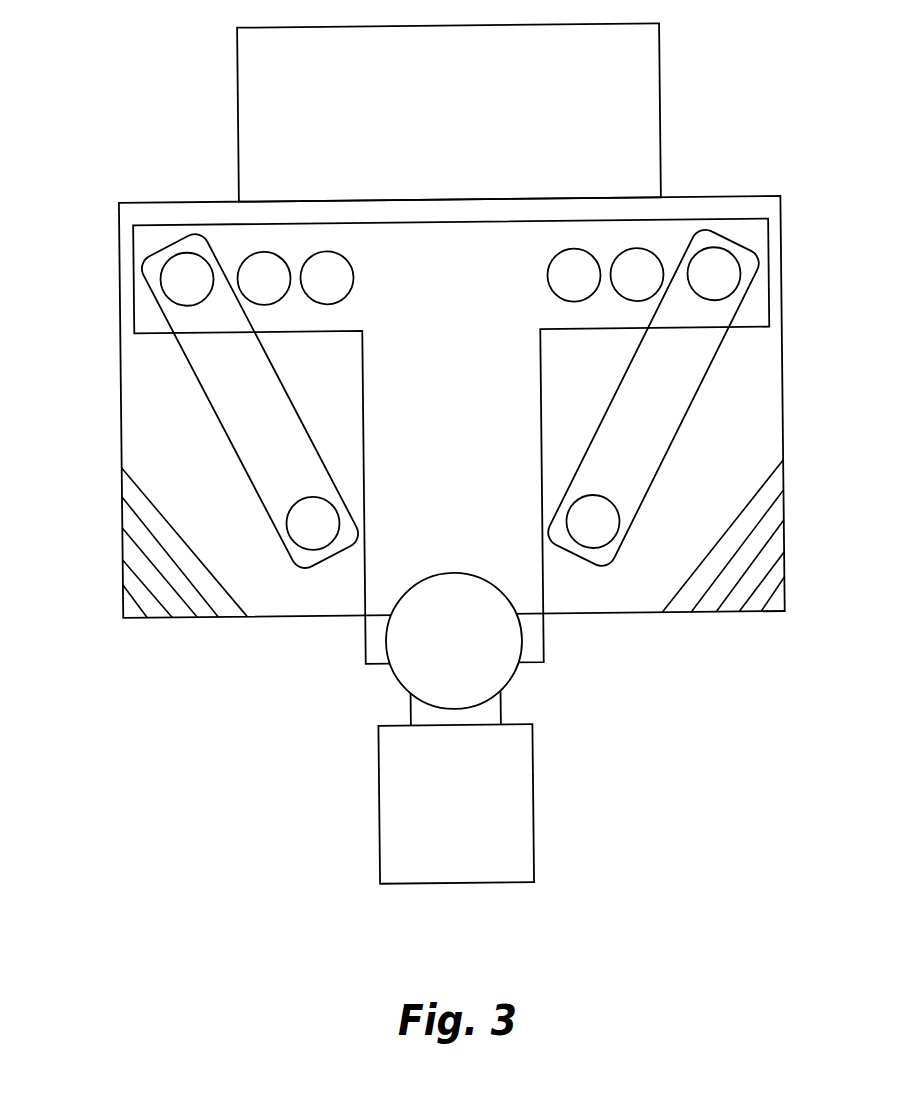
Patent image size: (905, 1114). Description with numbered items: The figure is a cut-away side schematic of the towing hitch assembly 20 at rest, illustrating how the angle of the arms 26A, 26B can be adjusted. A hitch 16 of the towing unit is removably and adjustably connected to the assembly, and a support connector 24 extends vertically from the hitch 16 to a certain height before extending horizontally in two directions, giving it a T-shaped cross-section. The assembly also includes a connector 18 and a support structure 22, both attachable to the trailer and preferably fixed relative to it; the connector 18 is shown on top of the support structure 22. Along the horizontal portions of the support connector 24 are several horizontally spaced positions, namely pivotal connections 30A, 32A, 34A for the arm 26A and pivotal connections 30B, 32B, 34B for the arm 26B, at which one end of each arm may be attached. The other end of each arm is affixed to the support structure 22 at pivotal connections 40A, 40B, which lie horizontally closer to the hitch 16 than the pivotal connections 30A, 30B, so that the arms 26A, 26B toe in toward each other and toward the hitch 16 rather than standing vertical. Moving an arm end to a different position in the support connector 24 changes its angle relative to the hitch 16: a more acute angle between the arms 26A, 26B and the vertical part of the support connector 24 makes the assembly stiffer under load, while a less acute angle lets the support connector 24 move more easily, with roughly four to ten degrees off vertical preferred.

The hitch 16 is at (489, 670).
The connector 18 is at (626, 71).
The towing hitch assembly 20 is at (719, 199).
The support structure 22 is at (733, 615).
The support connector 24 is at (476, 512).
The arm 26A is at (248, 426).
The arm 26B is at (677, 414).
The pivotal connection 30A is at (188, 275).
The pivotal connection 30B is at (721, 275).
The pivotal connection 32A is at (265, 276).
The pivotal connection 32B is at (638, 277).
The pivotal connection 34A is at (328, 277).
The pivotal connection 34B is at (575, 276).
The pivotal connection 40A is at (312, 536).
The pivotal connection 40B is at (602, 515).